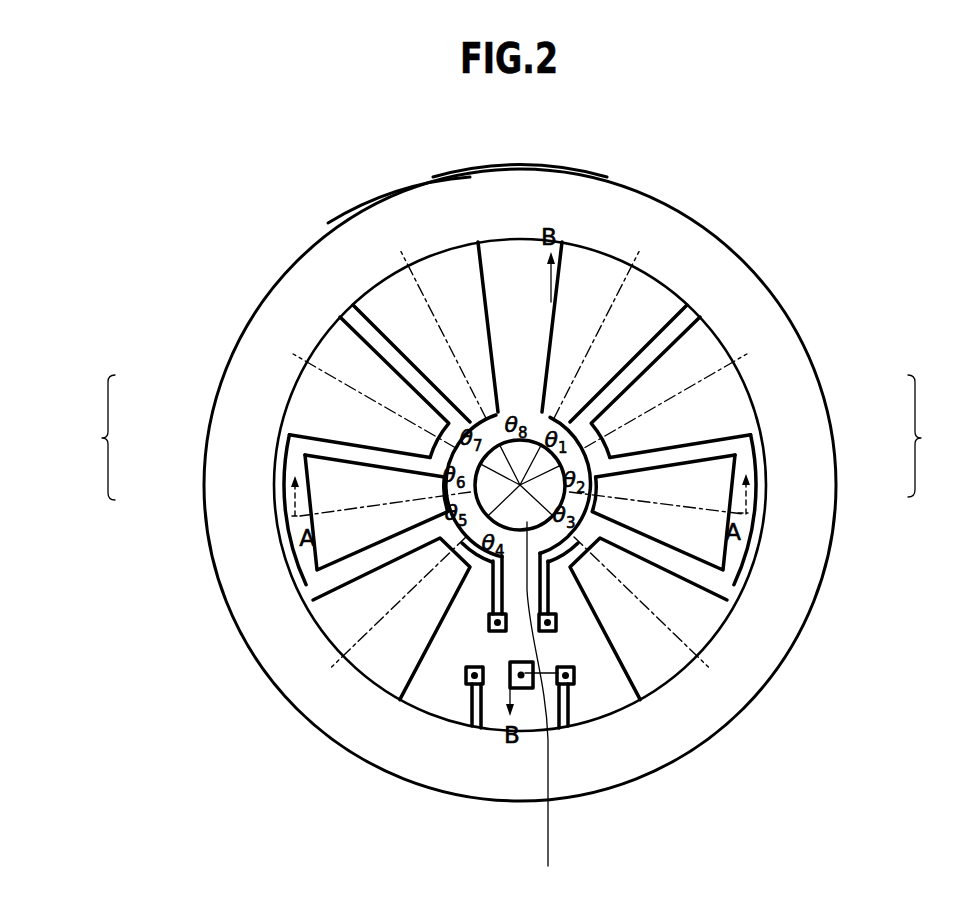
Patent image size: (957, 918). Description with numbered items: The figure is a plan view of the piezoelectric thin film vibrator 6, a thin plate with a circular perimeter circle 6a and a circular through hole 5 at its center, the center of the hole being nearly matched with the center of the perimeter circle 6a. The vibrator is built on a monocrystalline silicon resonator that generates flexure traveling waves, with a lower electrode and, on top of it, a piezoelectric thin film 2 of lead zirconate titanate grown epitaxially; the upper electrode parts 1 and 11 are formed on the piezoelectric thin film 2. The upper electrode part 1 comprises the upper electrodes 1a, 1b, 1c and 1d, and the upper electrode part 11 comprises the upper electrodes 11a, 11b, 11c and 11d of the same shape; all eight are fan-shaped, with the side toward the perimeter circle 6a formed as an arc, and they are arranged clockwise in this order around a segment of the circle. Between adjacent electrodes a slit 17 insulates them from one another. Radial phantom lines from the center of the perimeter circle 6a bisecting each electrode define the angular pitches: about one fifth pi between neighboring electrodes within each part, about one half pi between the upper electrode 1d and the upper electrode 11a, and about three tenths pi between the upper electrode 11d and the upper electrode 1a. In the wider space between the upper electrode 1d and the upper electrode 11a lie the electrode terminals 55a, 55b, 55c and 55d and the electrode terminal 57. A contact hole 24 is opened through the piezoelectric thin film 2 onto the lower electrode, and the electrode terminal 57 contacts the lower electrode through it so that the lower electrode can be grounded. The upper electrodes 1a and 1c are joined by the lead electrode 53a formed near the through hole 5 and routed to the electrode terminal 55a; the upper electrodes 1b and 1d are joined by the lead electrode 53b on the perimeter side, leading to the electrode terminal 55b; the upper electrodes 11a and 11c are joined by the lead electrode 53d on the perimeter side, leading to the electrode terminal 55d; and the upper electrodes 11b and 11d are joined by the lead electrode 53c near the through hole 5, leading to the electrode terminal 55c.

The upper electrode part 1 is at (922, 436).
The upper electrode 1a is at (742, 385).
The upper electrode 1b is at (727, 412).
The upper electrode 1c is at (737, 470).
The upper electrode 1d is at (720, 607).
The piezoelectric thin film 2 is at (520, 182).
The through hole 5 is at (573, 727).
The piezoelectric thin film vibrator 6 is at (290, 170).
The perimeter circle 6a is at (420, 180).
The upper electrode part 11 is at (90, 437).
The upper electrode 11a is at (320, 607).
The upper electrode 11b is at (303, 470).
The upper electrode 11c is at (313, 410).
The upper electrode 11d is at (298, 383).
The slit 17 is at (352, 325).
The contact hole 24 is at (520, 664).
The lead electrode 53a is at (587, 413).
The lead electrode 53b is at (698, 573).
The lead electrode 53c is at (428, 410).
The lead electrode 53d is at (342, 573).
The electrode terminal 55a is at (574, 683).
The electrode terminal 55b is at (556, 628).
The electrode terminal 55c is at (493, 632).
The electrode terminal 55d is at (477, 684).
The electrode terminal 57 is at (518, 690).